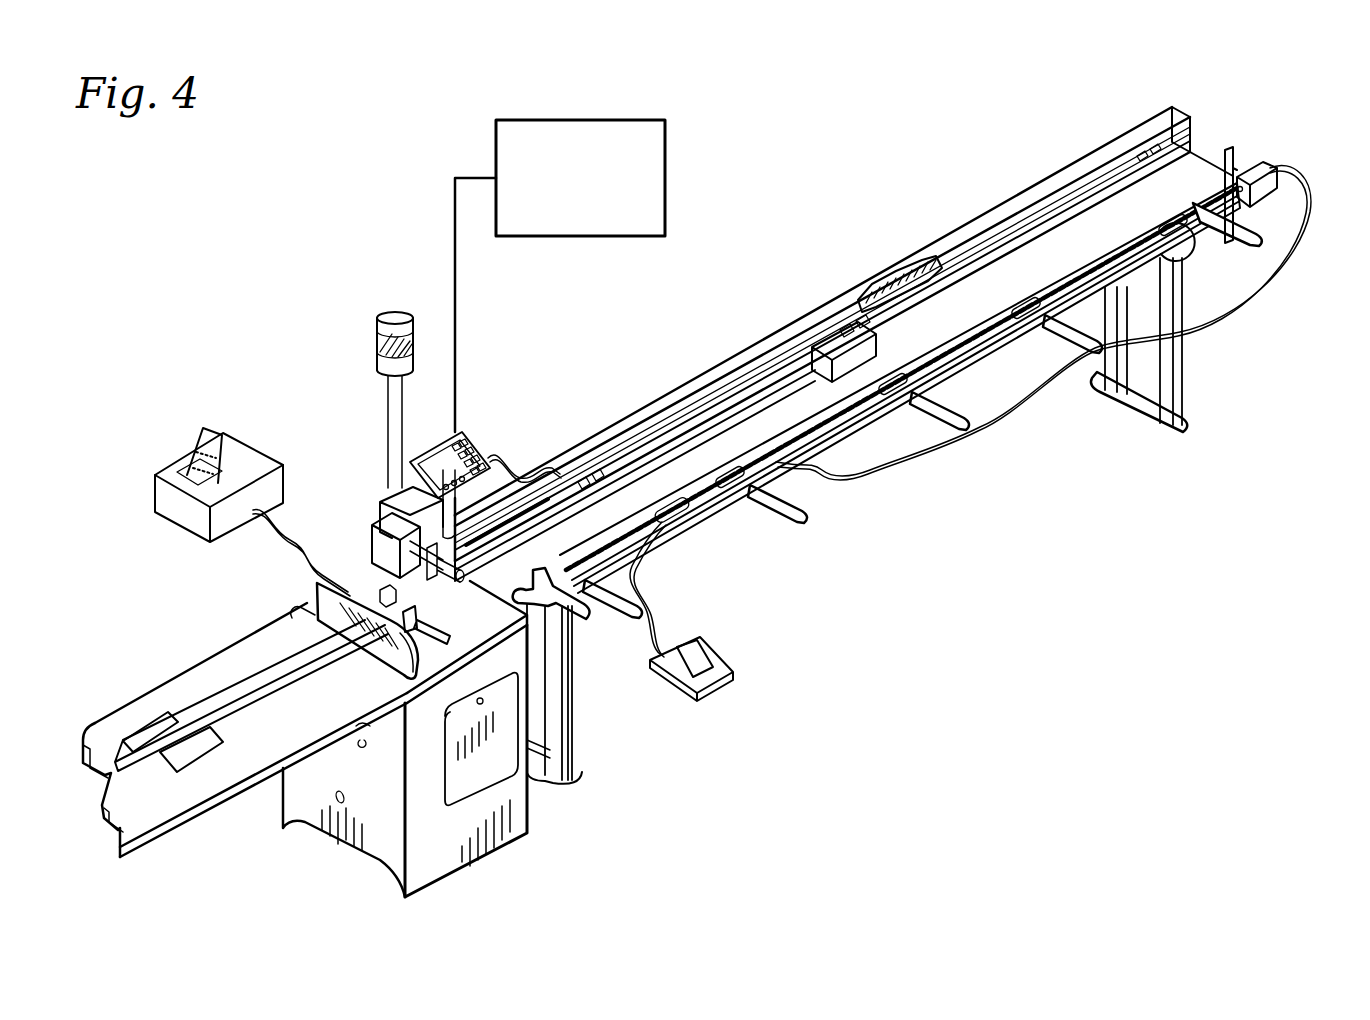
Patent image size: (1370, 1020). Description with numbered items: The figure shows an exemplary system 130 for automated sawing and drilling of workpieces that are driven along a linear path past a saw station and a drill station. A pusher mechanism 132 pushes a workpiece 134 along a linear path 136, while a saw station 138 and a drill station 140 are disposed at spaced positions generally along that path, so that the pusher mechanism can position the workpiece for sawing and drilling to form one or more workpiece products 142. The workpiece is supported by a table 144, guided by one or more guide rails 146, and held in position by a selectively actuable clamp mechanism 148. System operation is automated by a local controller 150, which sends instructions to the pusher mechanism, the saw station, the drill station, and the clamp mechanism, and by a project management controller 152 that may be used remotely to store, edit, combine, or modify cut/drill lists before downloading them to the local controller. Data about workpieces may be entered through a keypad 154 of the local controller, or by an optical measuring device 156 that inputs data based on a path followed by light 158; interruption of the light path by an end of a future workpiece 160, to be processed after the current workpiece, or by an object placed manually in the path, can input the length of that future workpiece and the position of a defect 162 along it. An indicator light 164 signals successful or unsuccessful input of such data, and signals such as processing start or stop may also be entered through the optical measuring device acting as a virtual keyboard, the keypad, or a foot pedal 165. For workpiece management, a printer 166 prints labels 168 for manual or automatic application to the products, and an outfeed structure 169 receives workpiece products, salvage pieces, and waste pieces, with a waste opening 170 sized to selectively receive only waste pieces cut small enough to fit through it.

The system 130 is at (194, 254).
The pusher mechanism 132 is at (904, 445).
The workpiece 134 is at (707, 428).
The linear path 136 is at (627, 475).
The saw station 138 is at (330, 614).
The drill station 140 is at (368, 538).
The workpiece products 142 is at (250, 688).
The table 144 is at (887, 483).
The guide rails 146 is at (822, 334).
The clamp mechanism 148 is at (445, 625).
The local controller 150 is at (482, 444).
The project management controller 152 is at (603, 121).
The keypad 154 is at (465, 437).
The optical measuring device 156 is at (1278, 178).
The light 158 is at (1160, 255).
The future workpiece 160 is at (720, 498).
The defect 162 is at (674, 525).
The indicator light 164 is at (377, 357).
The foot pedal 165 is at (693, 648).
The printer 166 is at (238, 499).
The labels 168 is at (213, 468).
The outfeed structure 169 is at (204, 688).
The waste opening 170 is at (148, 732).